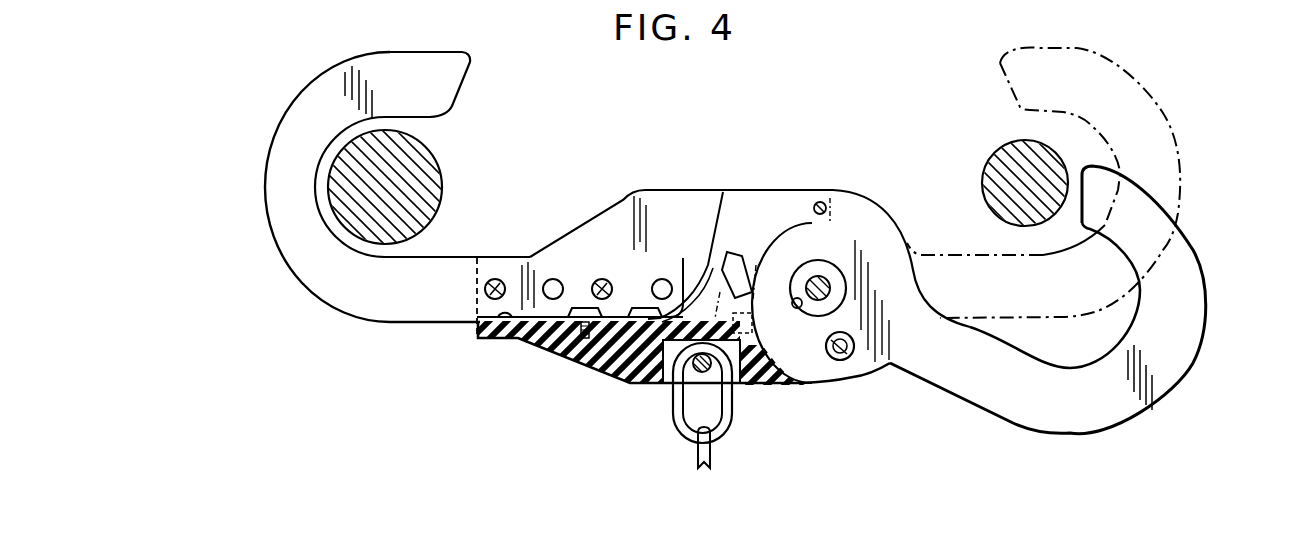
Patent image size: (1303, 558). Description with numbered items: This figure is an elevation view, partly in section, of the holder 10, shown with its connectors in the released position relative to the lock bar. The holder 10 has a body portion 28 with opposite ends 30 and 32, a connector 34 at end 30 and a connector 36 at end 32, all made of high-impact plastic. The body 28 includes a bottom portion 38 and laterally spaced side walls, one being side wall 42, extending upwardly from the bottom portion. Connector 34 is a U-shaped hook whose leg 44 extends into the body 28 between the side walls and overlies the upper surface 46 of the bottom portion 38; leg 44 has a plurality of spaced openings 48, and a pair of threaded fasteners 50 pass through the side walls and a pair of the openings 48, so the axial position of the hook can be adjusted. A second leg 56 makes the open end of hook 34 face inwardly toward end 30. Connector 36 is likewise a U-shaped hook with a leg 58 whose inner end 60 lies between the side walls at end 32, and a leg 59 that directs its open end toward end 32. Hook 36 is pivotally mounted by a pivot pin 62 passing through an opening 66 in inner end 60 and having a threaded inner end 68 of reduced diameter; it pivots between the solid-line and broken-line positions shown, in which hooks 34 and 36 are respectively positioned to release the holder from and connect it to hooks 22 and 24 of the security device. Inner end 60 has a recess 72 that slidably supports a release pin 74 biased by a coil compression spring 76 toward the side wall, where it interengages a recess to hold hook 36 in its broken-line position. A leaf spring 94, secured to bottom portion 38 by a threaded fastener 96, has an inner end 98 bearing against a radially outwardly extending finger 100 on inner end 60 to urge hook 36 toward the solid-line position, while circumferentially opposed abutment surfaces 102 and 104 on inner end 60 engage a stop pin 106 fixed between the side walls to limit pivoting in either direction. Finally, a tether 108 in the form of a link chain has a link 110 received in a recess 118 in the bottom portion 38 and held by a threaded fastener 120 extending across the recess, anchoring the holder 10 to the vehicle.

The holder 10 is at (752, 103).
The hook 22 is at (1003, 163).
The hook 24 is at (423, 162).
The body portion 28 is at (632, 190).
The end 30 is at (597, 223).
The end 32 is at (783, 387).
The connector 34 is at (285, 117).
The connector 36 is at (1140, 87).
The bottom portion 38 is at (640, 367).
The side wall 42 is at (672, 197).
The leg 44 is at (415, 310).
The upper surface 46 is at (507, 320).
The openings 48 is at (552, 280).
The threaded fasteners 50 is at (598, 284).
The leg 56 is at (430, 65).
The leg 58 is at (965, 377).
The leg 59 is at (1033, 63).
The inner end 60 is at (827, 373).
The pivot pin 62 is at (830, 270).
The opening 66 is at (795, 310).
The threaded inner end 68 is at (832, 283).
The recess 72 is at (847, 360).
The release pin 74 is at (848, 357).
The coil compression spring 76 is at (848, 336).
The leaf spring 94 is at (615, 327).
The threaded fastener 96 is at (575, 347).
The inner end 98 is at (723, 196).
The finger 100 is at (741, 257).
The abutment surface 102 is at (866, 222).
The abutment surface 104 is at (755, 262).
The stop pin 106 is at (824, 203).
The tether 108 is at (695, 462).
The link 110 is at (677, 395).
The recess 118 is at (743, 387).
The threaded fastener 120 is at (683, 422).